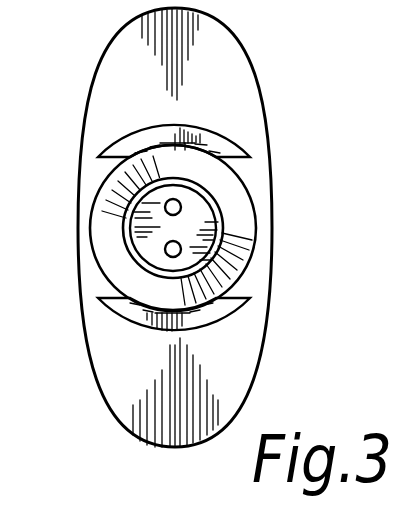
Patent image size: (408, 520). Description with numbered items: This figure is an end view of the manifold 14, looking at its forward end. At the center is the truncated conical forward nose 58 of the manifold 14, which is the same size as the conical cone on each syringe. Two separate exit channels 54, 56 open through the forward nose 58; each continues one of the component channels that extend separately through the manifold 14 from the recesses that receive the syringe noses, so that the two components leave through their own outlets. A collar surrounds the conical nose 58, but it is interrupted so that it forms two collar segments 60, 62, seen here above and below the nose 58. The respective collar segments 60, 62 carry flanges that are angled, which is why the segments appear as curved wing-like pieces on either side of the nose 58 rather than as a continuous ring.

The housing body 14 is at (122, 398).
The exit channel 54 is at (181, 207).
The exit channel 56 is at (181, 249).
The truncated conical forward nose 58 is at (140, 262).
The collar segment 60 is at (212, 133).
The collar segment 62 is at (240, 303).